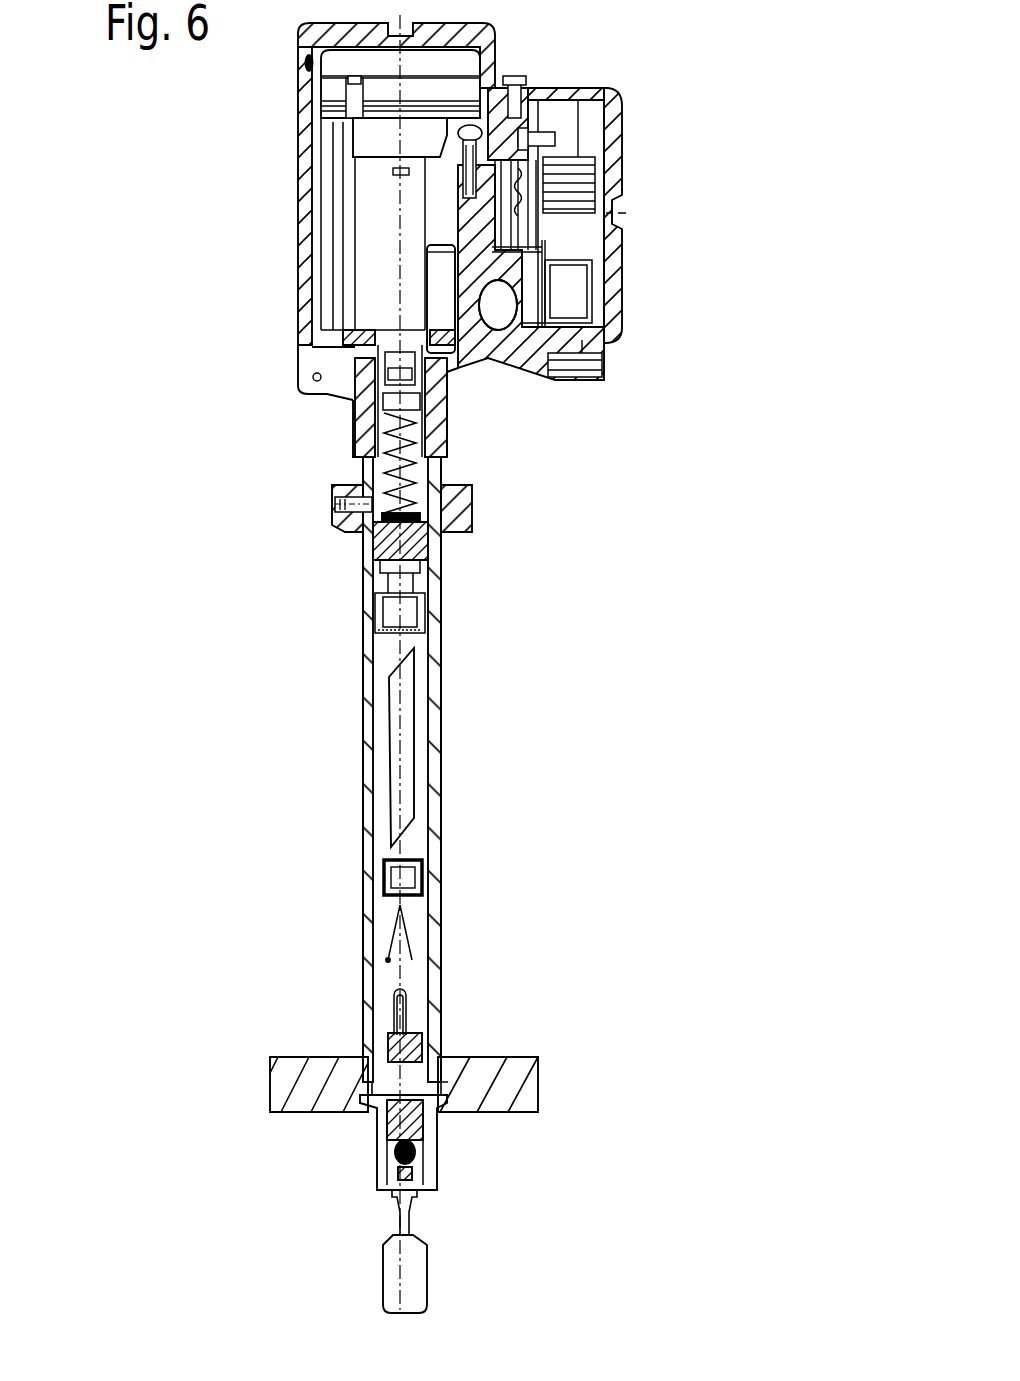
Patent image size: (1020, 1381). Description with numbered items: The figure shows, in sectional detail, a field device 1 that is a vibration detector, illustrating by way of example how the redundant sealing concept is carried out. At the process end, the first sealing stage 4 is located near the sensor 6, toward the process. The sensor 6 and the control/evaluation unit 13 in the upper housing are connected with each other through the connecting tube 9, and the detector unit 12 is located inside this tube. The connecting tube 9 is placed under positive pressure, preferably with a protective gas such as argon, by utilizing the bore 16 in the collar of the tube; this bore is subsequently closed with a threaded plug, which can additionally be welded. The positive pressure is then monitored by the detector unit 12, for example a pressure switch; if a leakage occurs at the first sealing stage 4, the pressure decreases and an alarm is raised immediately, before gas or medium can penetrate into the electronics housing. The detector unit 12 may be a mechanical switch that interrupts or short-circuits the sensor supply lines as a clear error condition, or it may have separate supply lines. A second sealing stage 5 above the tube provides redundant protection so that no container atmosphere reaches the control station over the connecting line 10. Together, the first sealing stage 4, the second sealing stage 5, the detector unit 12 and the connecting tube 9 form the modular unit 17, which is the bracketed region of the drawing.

The field device 1 is at (217, 387).
The first sealing stage 4 is at (380, 1175).
The second sealing stage 5 is at (428, 543).
The sensor 6 is at (467, 1177).
The connecting tube 9 is at (364, 745).
The connecting line 10 is at (502, 313).
The detector unit 12 is at (422, 880).
The control/evaluation unit 13 is at (363, 215).
The bore 16 is at (333, 505).
The modular unit 17 is at (463, 533).